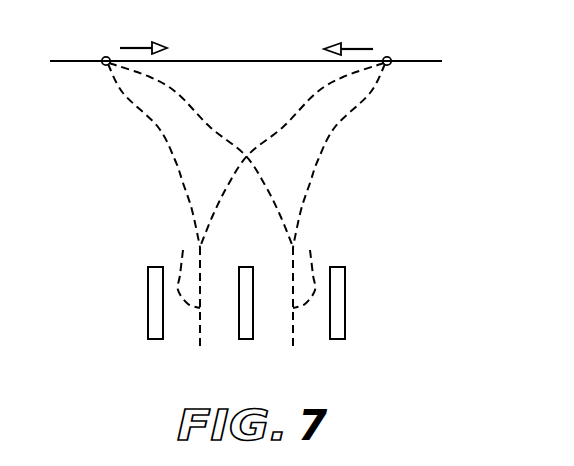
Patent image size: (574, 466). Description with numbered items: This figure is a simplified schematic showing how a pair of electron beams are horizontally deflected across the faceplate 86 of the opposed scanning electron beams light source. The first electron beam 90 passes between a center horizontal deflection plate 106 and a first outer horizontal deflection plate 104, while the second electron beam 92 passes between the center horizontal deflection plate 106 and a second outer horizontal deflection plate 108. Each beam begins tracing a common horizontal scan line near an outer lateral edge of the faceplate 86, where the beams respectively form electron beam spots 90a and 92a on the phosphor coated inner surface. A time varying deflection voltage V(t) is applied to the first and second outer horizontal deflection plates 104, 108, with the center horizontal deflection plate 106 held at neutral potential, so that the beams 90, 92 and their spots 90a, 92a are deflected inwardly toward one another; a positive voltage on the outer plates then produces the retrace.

The faceplate 86 is at (226, 61).
The electron beam spot 90a is at (104, 57).
The electron beam spot 92a is at (390, 58).
The first electron beam 90 is at (183, 249).
The second electron beam 92 is at (309, 249).
The first outer horizontal deflection plate 104 is at (148, 297).
The center horizontal deflection plate 106 is at (239, 303).
The second outer horizontal deflection plate 108 is at (345, 305).